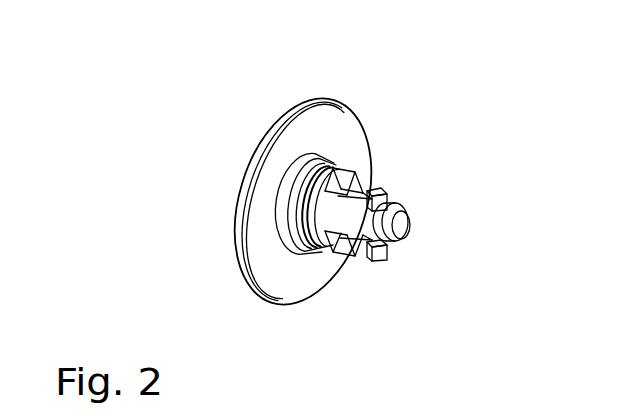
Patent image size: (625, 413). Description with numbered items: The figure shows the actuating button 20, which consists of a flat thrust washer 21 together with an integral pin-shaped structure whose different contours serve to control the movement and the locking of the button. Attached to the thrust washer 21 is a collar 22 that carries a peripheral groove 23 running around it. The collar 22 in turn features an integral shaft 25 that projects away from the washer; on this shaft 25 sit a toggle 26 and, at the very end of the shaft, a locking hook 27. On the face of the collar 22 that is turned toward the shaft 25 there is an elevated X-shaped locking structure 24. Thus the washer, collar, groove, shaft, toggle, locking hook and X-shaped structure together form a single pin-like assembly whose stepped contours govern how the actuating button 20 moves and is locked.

The actuating button 20 is at (222, 163).
The thrust washer 21 is at (315, 125).
The collar 22 is at (332, 158).
The peripheral groove 23 is at (307, 253).
The X-shaped locking structure 24 is at (347, 250).
The shaft 25 is at (365, 181).
The toggle 26 is at (388, 192).
The locking hook 27 is at (405, 209).